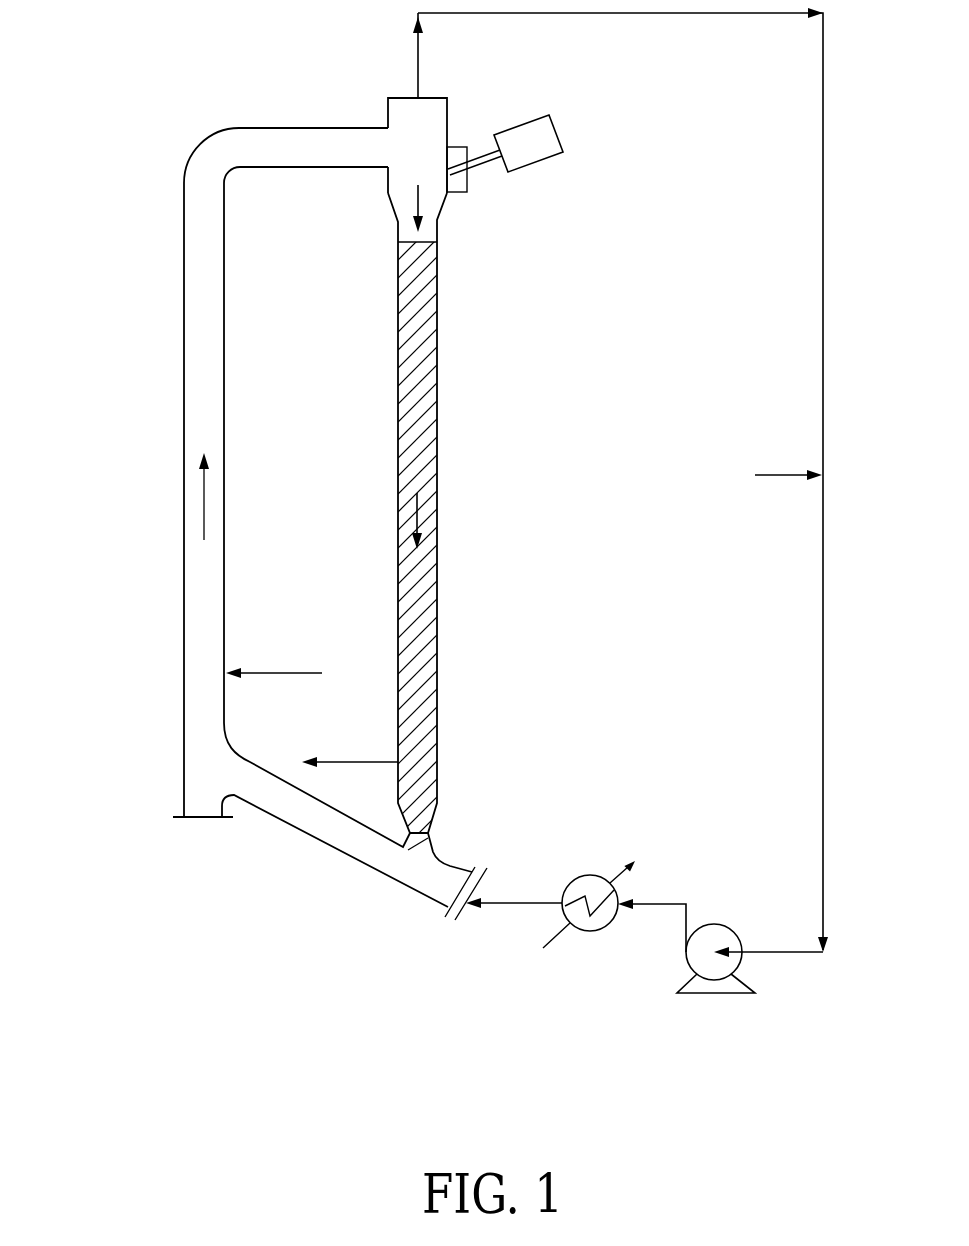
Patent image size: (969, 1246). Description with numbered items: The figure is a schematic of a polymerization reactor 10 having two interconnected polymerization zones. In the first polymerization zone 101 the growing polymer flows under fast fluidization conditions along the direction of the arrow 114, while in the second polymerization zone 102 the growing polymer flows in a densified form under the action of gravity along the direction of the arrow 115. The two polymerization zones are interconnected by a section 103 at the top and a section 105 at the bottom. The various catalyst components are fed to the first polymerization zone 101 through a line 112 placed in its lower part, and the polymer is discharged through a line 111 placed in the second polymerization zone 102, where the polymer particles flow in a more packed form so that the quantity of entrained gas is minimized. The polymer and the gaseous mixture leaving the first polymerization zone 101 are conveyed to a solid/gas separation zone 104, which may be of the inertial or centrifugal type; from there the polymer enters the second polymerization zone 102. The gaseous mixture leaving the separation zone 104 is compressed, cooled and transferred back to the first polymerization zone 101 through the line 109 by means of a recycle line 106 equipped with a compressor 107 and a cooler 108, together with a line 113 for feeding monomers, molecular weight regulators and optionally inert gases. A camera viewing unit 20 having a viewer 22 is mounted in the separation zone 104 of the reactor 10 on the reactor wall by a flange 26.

The polymerization reactor 10 is at (133, 323).
The camera viewing unit 20 is at (582, 149).
The viewer 22 is at (483, 167).
The flange 26 is at (457, 180).
The first polymerization zone 101 is at (223, 580).
The second polymerization zone 102 is at (437, 405).
The section 103 is at (297, 127).
The solid/gas separation zone 104 is at (450, 107).
The section 105 is at (327, 844).
The recycle line 106 is at (822, 205).
The compressor 107 is at (722, 925).
The cooler 108 is at (605, 932).
The line 109 is at (498, 890).
The line 111 is at (348, 762).
The line 112 is at (305, 673).
The line 113 is at (770, 475).
The arrow 114 is at (205, 502).
The arrow 115 is at (437, 493).